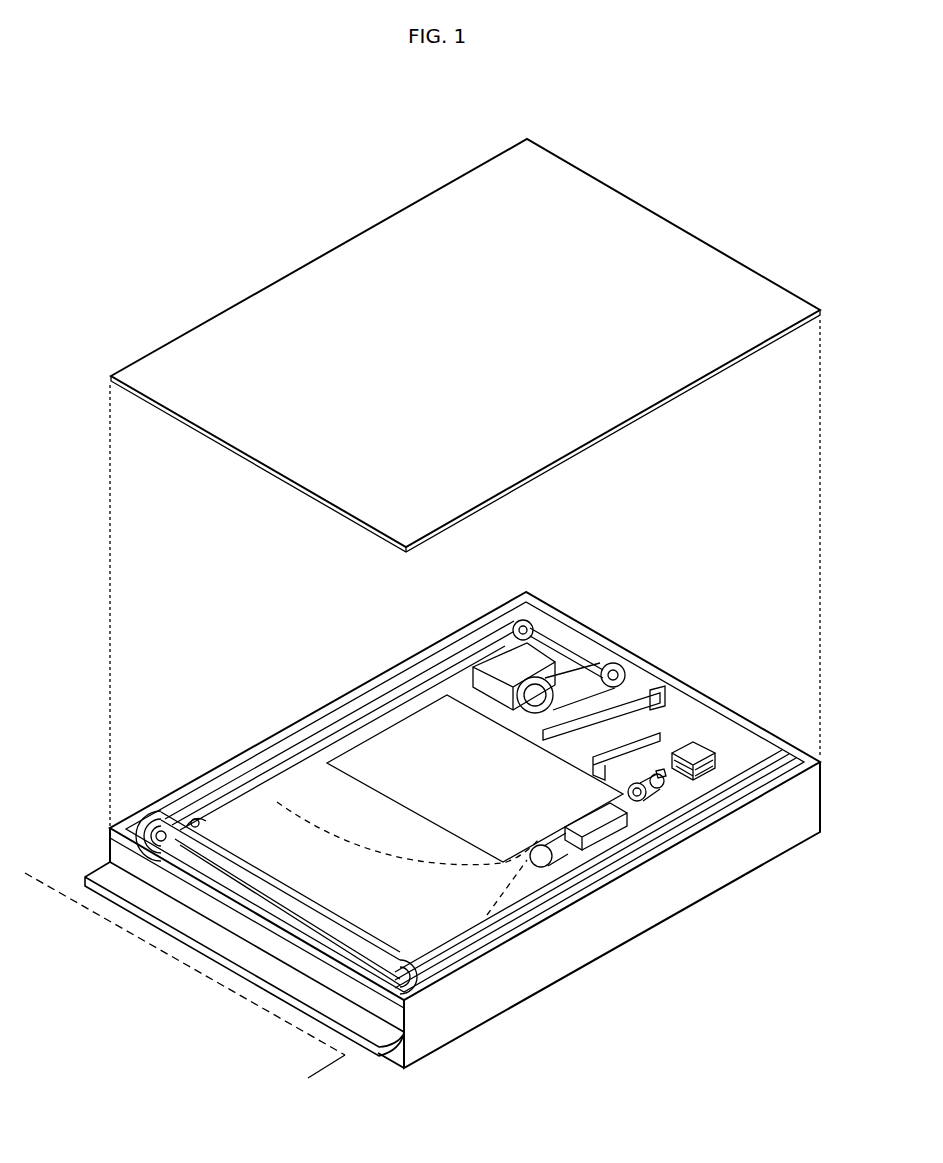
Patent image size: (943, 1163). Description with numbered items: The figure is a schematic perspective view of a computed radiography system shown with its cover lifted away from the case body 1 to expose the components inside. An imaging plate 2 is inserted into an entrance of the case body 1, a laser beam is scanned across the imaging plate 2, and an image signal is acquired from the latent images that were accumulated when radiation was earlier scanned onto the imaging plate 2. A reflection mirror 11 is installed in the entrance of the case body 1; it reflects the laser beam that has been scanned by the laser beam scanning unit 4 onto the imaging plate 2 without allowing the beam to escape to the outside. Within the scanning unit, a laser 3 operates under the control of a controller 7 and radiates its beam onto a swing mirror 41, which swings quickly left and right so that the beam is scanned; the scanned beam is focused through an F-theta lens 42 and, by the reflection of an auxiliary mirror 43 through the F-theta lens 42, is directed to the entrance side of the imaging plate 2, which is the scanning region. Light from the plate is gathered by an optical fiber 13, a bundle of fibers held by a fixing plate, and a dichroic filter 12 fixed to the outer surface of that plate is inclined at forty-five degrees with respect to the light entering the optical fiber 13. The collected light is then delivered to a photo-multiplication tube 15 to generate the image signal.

The case body 1 is at (537, 973).
The imaging plate 2 is at (333, 1066).
The laser 3 is at (672, 792).
The laser beam scanning unit 4 is at (770, 660).
The controller 7 is at (400, 737).
The reflection mirror 11 is at (108, 855).
The dichroic filter 12 is at (170, 815).
The optical fiber 13 is at (275, 800).
The photo-multiplication tube 15 is at (612, 814).
The swing mirror 41 is at (695, 741).
The F-theta lens 42 is at (662, 700).
The auxiliary mirror 43 is at (652, 668).